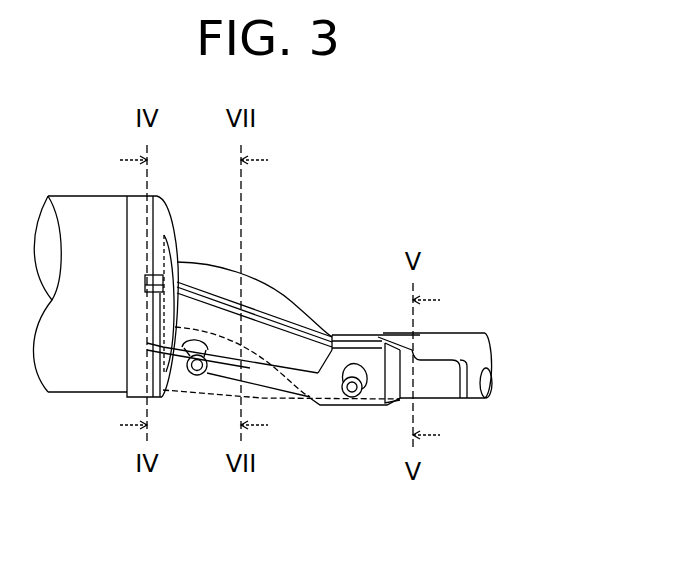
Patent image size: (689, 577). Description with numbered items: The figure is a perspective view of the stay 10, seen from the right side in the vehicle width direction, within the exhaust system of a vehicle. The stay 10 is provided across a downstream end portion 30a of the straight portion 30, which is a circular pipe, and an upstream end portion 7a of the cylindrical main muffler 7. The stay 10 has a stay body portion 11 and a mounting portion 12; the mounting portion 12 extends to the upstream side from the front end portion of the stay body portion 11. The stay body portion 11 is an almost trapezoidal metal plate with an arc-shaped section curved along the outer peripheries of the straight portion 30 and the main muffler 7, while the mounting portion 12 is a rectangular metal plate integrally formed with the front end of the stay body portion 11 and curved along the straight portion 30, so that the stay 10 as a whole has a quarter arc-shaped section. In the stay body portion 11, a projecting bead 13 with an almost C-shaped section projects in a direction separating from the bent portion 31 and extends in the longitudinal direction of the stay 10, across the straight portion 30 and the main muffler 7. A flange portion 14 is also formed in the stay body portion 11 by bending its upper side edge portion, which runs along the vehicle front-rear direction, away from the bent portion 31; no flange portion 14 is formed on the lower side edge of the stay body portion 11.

The main muffler 7 is at (70, 394).
The upstream end portion 7a is at (138, 201).
The stay 10 is at (305, 407).
The stay body portion 11 is at (272, 393).
The mounting portion 12 is at (438, 391).
The projecting bead 13 is at (223, 371).
The flange portion 14 is at (275, 320).
The straight portion 30 is at (478, 403).
The downstream end portion 30a is at (450, 338).
The bent portion 31 is at (266, 312).